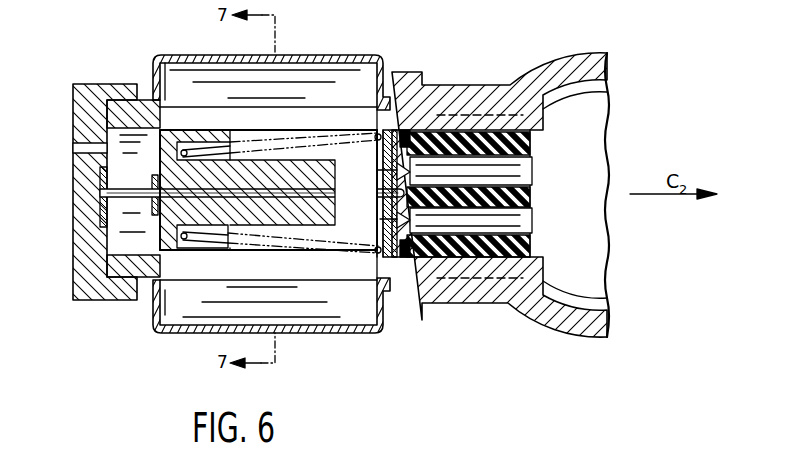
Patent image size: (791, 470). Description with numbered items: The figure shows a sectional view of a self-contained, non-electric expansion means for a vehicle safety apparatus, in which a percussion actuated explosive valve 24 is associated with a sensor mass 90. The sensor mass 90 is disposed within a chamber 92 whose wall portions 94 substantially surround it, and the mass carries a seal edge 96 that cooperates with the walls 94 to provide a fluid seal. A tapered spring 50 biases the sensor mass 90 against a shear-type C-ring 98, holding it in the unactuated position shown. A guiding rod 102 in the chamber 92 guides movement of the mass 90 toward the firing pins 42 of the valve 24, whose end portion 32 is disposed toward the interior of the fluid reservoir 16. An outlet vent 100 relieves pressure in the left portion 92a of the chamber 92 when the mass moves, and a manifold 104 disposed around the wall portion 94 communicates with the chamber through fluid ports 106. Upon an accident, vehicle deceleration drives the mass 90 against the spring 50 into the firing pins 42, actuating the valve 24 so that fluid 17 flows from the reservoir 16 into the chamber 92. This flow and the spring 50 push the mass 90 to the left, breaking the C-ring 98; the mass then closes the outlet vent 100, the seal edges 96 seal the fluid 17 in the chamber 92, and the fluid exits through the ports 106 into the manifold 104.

The fluid reservoir 16 is at (600, 322).
The fluid 17 is at (592, 172).
The percussion actuated explosive valve 24 is at (487, 101).
The end portion 32 is at (546, 130).
The firing pins 42 is at (376, 171).
The tapered spring 50 is at (352, 258).
The sensor mass 90 is at (288, 184).
The chamber 92 is at (280, 252).
The left portion of the chamber 92a is at (117, 213).
The wall portions 94 is at (123, 113).
The seal edge 96 is at (166, 258).
The shear-type C-ring 98 is at (156, 183).
The outlet vent 100 is at (78, 148).
The guiding rod 102 is at (323, 200).
The manifold 104 is at (370, 62).
The fluid ports 106 is at (303, 118).